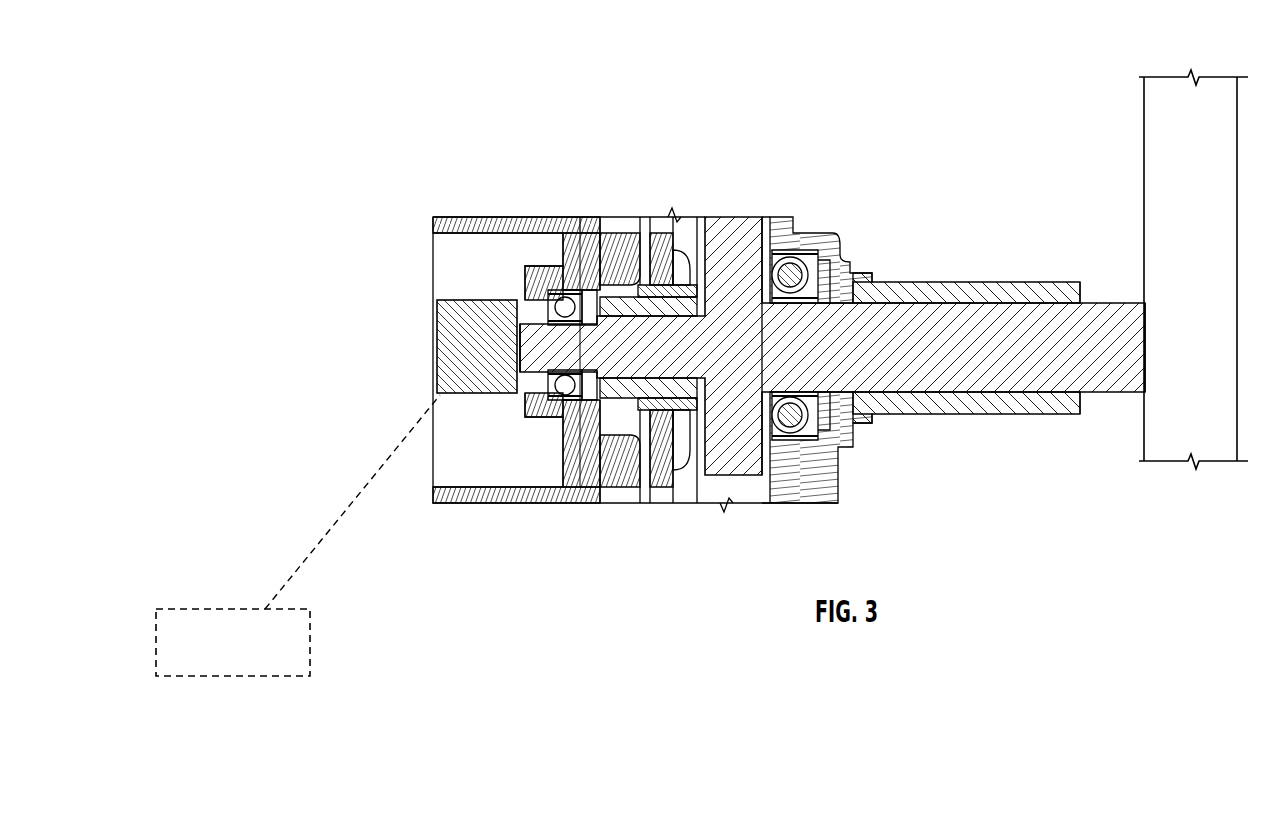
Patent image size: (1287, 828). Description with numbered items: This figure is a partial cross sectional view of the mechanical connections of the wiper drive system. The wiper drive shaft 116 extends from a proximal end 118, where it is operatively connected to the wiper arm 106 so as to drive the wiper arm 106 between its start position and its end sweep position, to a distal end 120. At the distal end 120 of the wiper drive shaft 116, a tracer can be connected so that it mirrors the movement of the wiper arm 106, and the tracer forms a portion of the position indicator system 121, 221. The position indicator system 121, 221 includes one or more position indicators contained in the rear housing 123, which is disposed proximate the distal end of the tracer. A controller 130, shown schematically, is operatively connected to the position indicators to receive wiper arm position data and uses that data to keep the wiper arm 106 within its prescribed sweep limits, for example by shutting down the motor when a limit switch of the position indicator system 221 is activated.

The wiper arm 106 is at (1160, 197).
The wiper drive shaft 116 is at (887, 314).
The proximal end 118 is at (1130, 406).
The distal end 120 is at (529, 344).
The position indicator system 121 is at (436, 272).
The position indicator system 221 is at (469, 307).
The rear housing 123 is at (473, 253).
The controller 130 is at (250, 653).